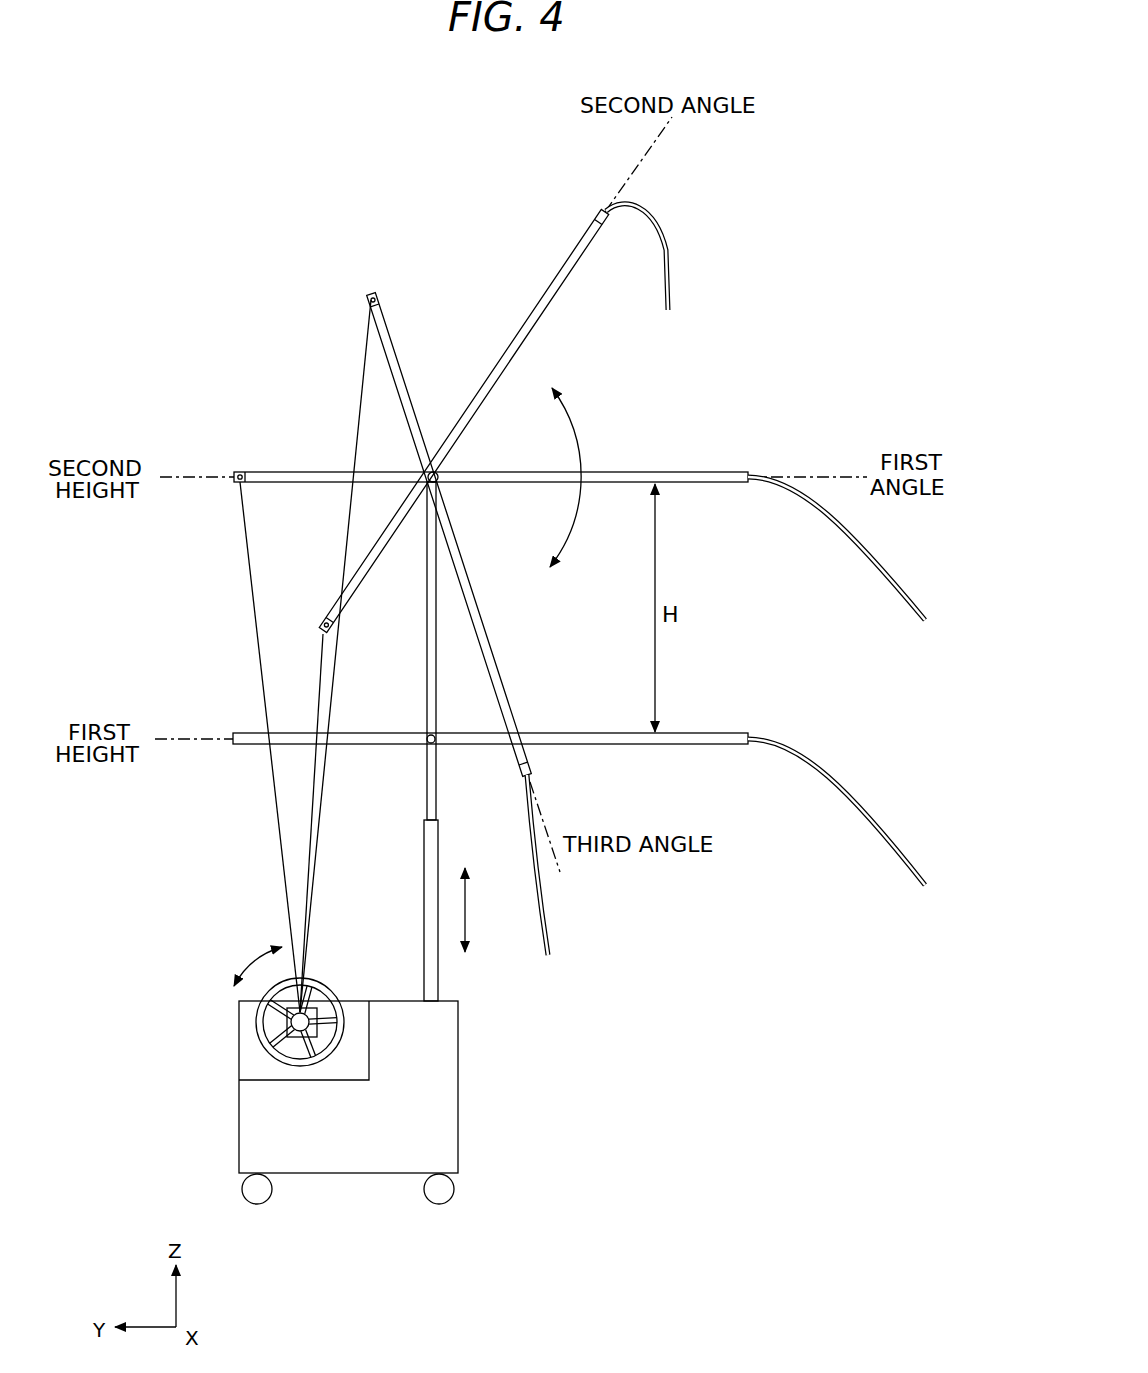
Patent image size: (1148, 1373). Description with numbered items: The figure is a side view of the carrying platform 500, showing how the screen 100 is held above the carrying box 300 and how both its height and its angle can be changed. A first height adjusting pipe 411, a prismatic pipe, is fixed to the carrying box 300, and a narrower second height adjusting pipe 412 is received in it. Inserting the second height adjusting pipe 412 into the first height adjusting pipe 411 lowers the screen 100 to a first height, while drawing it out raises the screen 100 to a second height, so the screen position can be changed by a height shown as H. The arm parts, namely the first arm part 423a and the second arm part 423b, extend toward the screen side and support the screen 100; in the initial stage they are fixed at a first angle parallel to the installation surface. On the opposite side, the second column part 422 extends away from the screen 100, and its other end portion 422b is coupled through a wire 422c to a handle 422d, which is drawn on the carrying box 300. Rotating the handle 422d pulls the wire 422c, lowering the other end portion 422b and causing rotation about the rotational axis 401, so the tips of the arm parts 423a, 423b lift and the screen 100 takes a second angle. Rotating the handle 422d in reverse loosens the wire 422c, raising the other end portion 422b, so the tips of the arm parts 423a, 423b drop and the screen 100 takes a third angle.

The carrying platform 500 is at (853, 120).
The screen 100 is at (678, 245).
The carrying box 300 is at (239, 1097).
The rotational axis 401 is at (433, 470).
The first height adjusting pipe 411 is at (424, 870).
The second height adjusting pipe 412 is at (427, 782).
The second column part 422 is at (261, 683).
The other end portion 422b is at (245, 470).
The wire 422c is at (330, 715).
The handle 422d is at (322, 985).
The first arm part 423a is at (511, 512).
The second arm part 423b is at (535, 292).